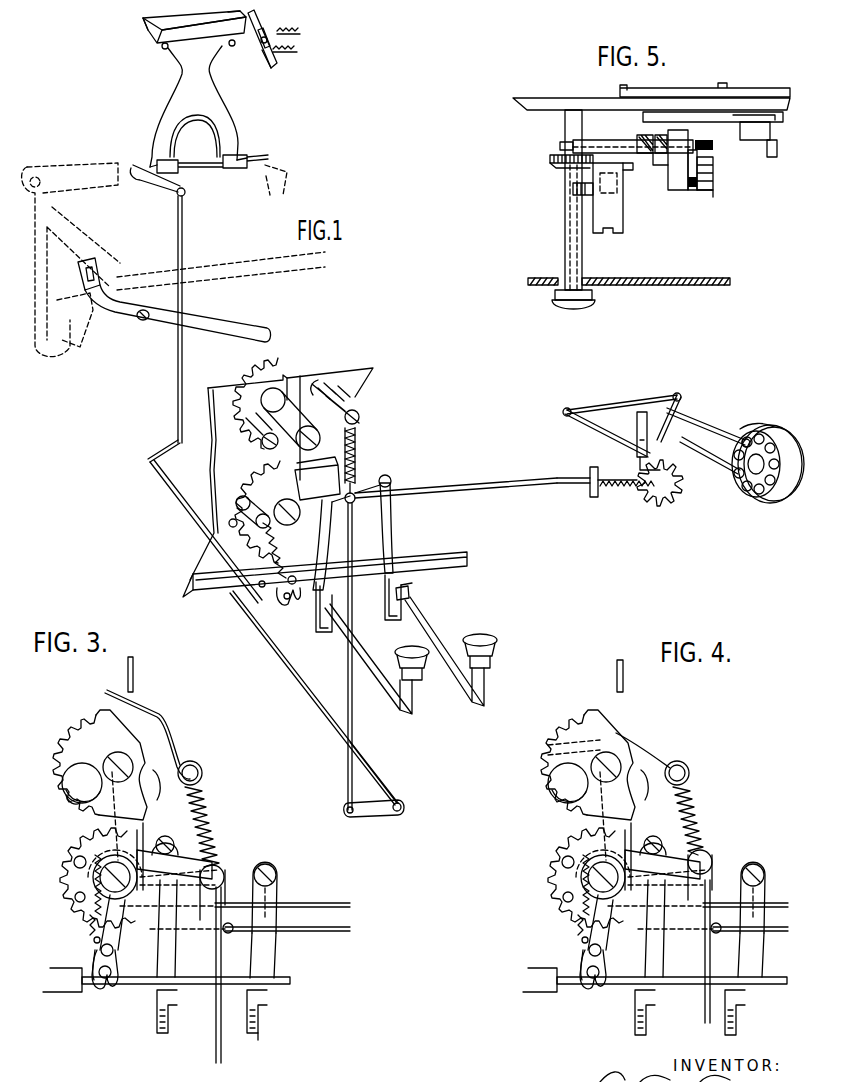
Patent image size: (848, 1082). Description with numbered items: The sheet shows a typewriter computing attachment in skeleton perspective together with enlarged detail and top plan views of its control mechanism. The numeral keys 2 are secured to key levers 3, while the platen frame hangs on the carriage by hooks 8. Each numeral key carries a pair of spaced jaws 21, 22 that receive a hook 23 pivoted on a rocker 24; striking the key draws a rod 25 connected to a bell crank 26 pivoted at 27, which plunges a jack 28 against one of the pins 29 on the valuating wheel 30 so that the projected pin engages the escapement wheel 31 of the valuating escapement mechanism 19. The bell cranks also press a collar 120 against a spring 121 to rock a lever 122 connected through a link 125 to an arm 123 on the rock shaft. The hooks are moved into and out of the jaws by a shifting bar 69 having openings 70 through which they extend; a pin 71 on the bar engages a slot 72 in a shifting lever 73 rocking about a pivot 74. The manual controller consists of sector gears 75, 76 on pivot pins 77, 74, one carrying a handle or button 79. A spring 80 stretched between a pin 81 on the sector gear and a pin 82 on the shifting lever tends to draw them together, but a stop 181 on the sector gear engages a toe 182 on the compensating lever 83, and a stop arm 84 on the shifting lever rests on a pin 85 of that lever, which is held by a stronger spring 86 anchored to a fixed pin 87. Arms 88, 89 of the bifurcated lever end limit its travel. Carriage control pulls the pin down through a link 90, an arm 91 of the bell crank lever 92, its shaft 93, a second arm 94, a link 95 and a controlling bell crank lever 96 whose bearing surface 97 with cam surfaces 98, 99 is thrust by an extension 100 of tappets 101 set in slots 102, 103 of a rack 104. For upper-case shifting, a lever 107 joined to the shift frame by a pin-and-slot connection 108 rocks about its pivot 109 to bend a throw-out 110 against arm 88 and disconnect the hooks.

In FIG. 1, the numeral keys 2 is at (463, 641).
In FIG. 1, the key levers 3 is at (468, 694).
In FIG. 3, the key levers 3 is at (256, 1042).
In FIG. 1, the hooks 8 is at (317, 484).
In FIG. 1, the valuating escapement mechanism 19 is at (746, 430).
In FIG. 1, the jaw 21 is at (394, 593).
In FIG. 3, the jaw 21 is at (268, 978).
In FIG. 4, the jaw 21 is at (645, 1012).
In FIG. 1, the jaw 22 is at (410, 600).
In FIG. 3, the jaw 22 is at (256, 1020).
In FIG. 4, the jaw 22 is at (735, 1012).
In FIG. 1, the hook 23 is at (432, 583).
In FIG. 5, the hook 23 is at (770, 158).
In FIG. 3, the hook 23 is at (272, 998).
In FIG. 4, the hook 23 is at (764, 919).
In FIG. 1, the rocker 24 is at (356, 493).
In FIG. 5, the rocker 24 is at (776, 117).
In FIG. 3, the rocker 24 is at (232, 935).
In FIG. 4, the rocker 24 is at (716, 928).
In FIG. 1, the rod 25 is at (478, 497).
In FIG. 5, the rod 25 is at (756, 89).
In FIG. 3, the rod 25 is at (313, 907).
In FIG. 4, the rod 25 is at (698, 917).
In FIG. 1, the bell crank 26 is at (630, 434).
In FIG. 1, the pivot 27 is at (638, 451).
In FIG. 1, the jack 28 is at (720, 431).
In FIG. 1, the pins 29 is at (762, 432).
In FIG. 1, the valuating wheel 30 is at (770, 505).
In FIG. 1, the escapement wheel 31 is at (716, 466).
In FIG. 1, the shifting bar 69 is at (468, 554).
In FIG. 5, the shifting bar 69 is at (776, 142).
In FIG. 3, the shifting bar 69 is at (203, 985).
In FIG. 4, the shifting bar 69 is at (655, 936).
In FIG. 1, the openings 70 is at (403, 570).
In FIG. 1, the pin 71 is at (286, 608).
In FIG. 3, the pin 71 is at (101, 988).
In FIG. 4, the pin 71 is at (593, 969).
In FIG. 1, the slot 72 is at (278, 609).
In FIG. 1, the shifting lever 73 is at (260, 576).
In FIG. 3, the shifting lever 73 is at (95, 942).
In FIG. 4, the shifting lever 73 is at (613, 946).
In FIG. 1, the pivot 74 is at (282, 505).
In FIG. 5, the pivot 74 is at (630, 163).
In FIG. 1, the sector gear 75 is at (252, 380).
In FIG. 5, the sector gear 75 is at (556, 167).
In FIG. 3, the sector gear 75 is at (63, 763).
In FIG. 4, the sector gear 75 is at (564, 765).
In FIG. 1, the sector gear 76 is at (250, 548).
In FIG. 3, the sector gear 76 is at (65, 874).
In FIG. 4, the sector gear 76 is at (589, 878).
In FIG. 1, the pivot pin 77 is at (292, 410).
In FIG. 5, the pivot pin 77 is at (622, 226).
In FIG. 3, the pivot pin 77 is at (118, 783).
In FIG. 4, the pivot pin 77 is at (606, 767).
In FIG. 1, the handle or button 79 is at (253, 442).
In FIG. 5, the handle or button 79 is at (593, 306).
In FIG. 3, the handle or button 79 is at (70, 790).
In FIG. 1, the spring 80 is at (275, 527).
In FIG. 5, the spring 80 is at (587, 196).
In FIG. 3, the spring 80 is at (116, 930).
In FIG. 4, the spring 80 is at (592, 930).
In FIG. 1, the pin 81 is at (233, 527).
In FIG. 5, the pin 81 is at (568, 200).
In FIG. 3, the pin 81 is at (74, 858).
In FIG. 4, the pin 81 is at (547, 862).
In FIG. 1, the pin 82 is at (286, 553).
In FIG. 5, the pin 82 is at (618, 190).
In FIG. 3, the pin 82 is at (113, 956).
In FIG. 4, the pin 82 is at (615, 965).
In FIG. 5, the compensating lever 83 is at (666, 160).
In FIG. 3, the compensating lever 83 is at (165, 912).
In FIG. 4, the compensating lever 83 is at (665, 851).
In FIG. 5, the stop arm 84 is at (709, 144).
In FIG. 3, the stop arm 84 is at (188, 847).
In FIG. 4, the stop arm 84 is at (658, 838).
In FIG. 1, the pin 85 is at (352, 522).
In FIG. 5, the pin 85 is at (712, 187).
In FIG. 3, the pin 85 is at (222, 870).
In FIG. 4, the pin 85 is at (700, 875).
In FIG. 1, the spring 86 is at (356, 441).
In FIG. 5, the spring 86 is at (692, 190).
In FIG. 3, the spring 86 is at (200, 792).
In FIG. 4, the spring 86 is at (696, 821).
In FIG. 1, the fixed pin 87 is at (360, 417).
In FIG. 5, the fixed pin 87 is at (675, 190).
In FIG. 3, the fixed pin 87 is at (203, 770).
In FIG. 4, the fixed pin 87 is at (677, 773).
In FIG. 1, the arm 88 is at (281, 474).
In FIG. 3, the arm 88 is at (139, 800).
In FIG. 4, the arm 88 is at (619, 800).
In FIG. 5, the arm 89 is at (560, 144).
In FIG. 3, the arm 89 is at (87, 766).
In FIG. 4, the arm 89 is at (555, 785).
In FIG. 1, the link 90 is at (353, 725).
In FIG. 5, the link 90 is at (714, 170).
In FIG. 3, the link 90 is at (215, 1042).
In FIG. 4, the link 90 is at (707, 951).
In FIG. 1, the arm 91 is at (380, 816).
In FIG. 1, the bell crank lever 92 is at (380, 775).
In FIG. 1, the shaft 93 is at (312, 690).
In FIG. 1, the arm 94 is at (176, 442).
In FIG. 1, the link 95 is at (183, 241).
In FIG. 1, the controlling bell crank lever 96 is at (243, 130).
In FIG. 1, the bearing surface 97 is at (201, 37).
In FIG. 1, the cam surface 98 is at (240, 11).
In FIG. 1, the cam surface 99 is at (150, 38).
In FIG. 1, the extension 100 is at (256, 14).
In FIG. 1, the tappets 101 is at (266, 60).
In FIG. 1, the slot 102 is at (300, 33).
In FIG. 1, the slot 103 is at (297, 52).
In FIG. 1, the rack 104 is at (262, 44).
In FIG. 1, the lever 107 is at (163, 325).
In FIG. 3, the lever 107 is at (127, 663).
In FIG. 4, the lever 107 is at (620, 676).
In FIG. 1, the pin-and-slot connection 108 is at (84, 276).
In FIG. 1, the pivot 109 is at (140, 320).
In FIG. 1, the throw-out 110 is at (318, 388).
In FIG. 5, the throw-out 110 is at (610, 142).
In FIG. 3, the throw-out 110 is at (153, 711).
In FIG. 4, the throw-out 110 is at (609, 749).
In FIG. 1, the collar 120 is at (671, 503).
In FIG. 1, the spring 121 is at (625, 496).
In FIG. 1, the lever 122 is at (602, 432).
In FIG. 1, the arm 123 is at (682, 405).
In FIG. 1, the link 125 is at (616, 407).
In FIG. 5, the stop 181 is at (550, 158).
In FIG. 3, the stop 181 is at (74, 899).
In FIG. 4, the stop 181 is at (554, 889).
In FIG. 3, the toe 182 is at (88, 925).
In FIG. 4, the toe 182 is at (560, 929).